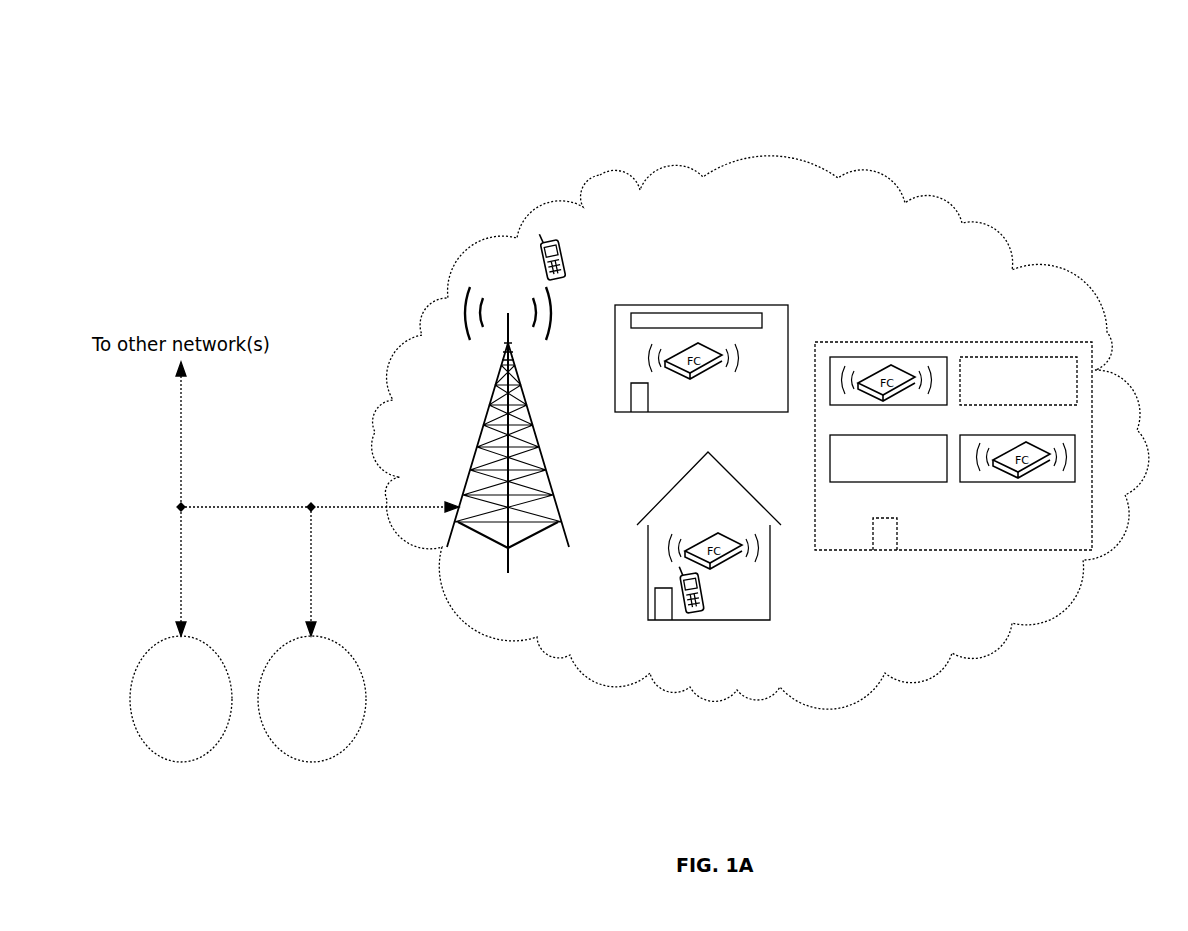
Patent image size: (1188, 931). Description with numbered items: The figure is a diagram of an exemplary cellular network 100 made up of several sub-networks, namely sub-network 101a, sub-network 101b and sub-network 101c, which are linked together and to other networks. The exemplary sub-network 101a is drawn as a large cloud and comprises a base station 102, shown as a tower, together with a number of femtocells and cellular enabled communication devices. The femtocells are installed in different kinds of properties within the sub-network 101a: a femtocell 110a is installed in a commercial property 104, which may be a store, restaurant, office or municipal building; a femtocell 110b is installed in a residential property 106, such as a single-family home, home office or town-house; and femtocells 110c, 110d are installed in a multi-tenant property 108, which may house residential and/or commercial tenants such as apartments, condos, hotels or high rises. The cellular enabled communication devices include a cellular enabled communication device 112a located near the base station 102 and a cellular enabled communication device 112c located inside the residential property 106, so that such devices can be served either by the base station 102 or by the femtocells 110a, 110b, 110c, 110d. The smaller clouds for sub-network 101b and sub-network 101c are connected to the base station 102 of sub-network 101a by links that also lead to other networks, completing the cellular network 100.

The cellular network 100 is at (150, 112).
The sub-network 101a is at (610, 177).
The sub-network 101b is at (183, 762).
The sub-network 101c is at (258, 505).
The base station 102 is at (522, 398).
The commercial property 104 is at (648, 305).
The residential property 106 is at (688, 476).
The multi-tenant property 108 is at (1094, 374).
The femtocell 110a is at (700, 374).
The femtocell 110b is at (715, 563).
The femtocell 110c is at (905, 392).
The femtocell 110d is at (1040, 468).
The cellular enabled communication device 112a is at (566, 252).
The cellular enabled communication device 112c is at (695, 613).